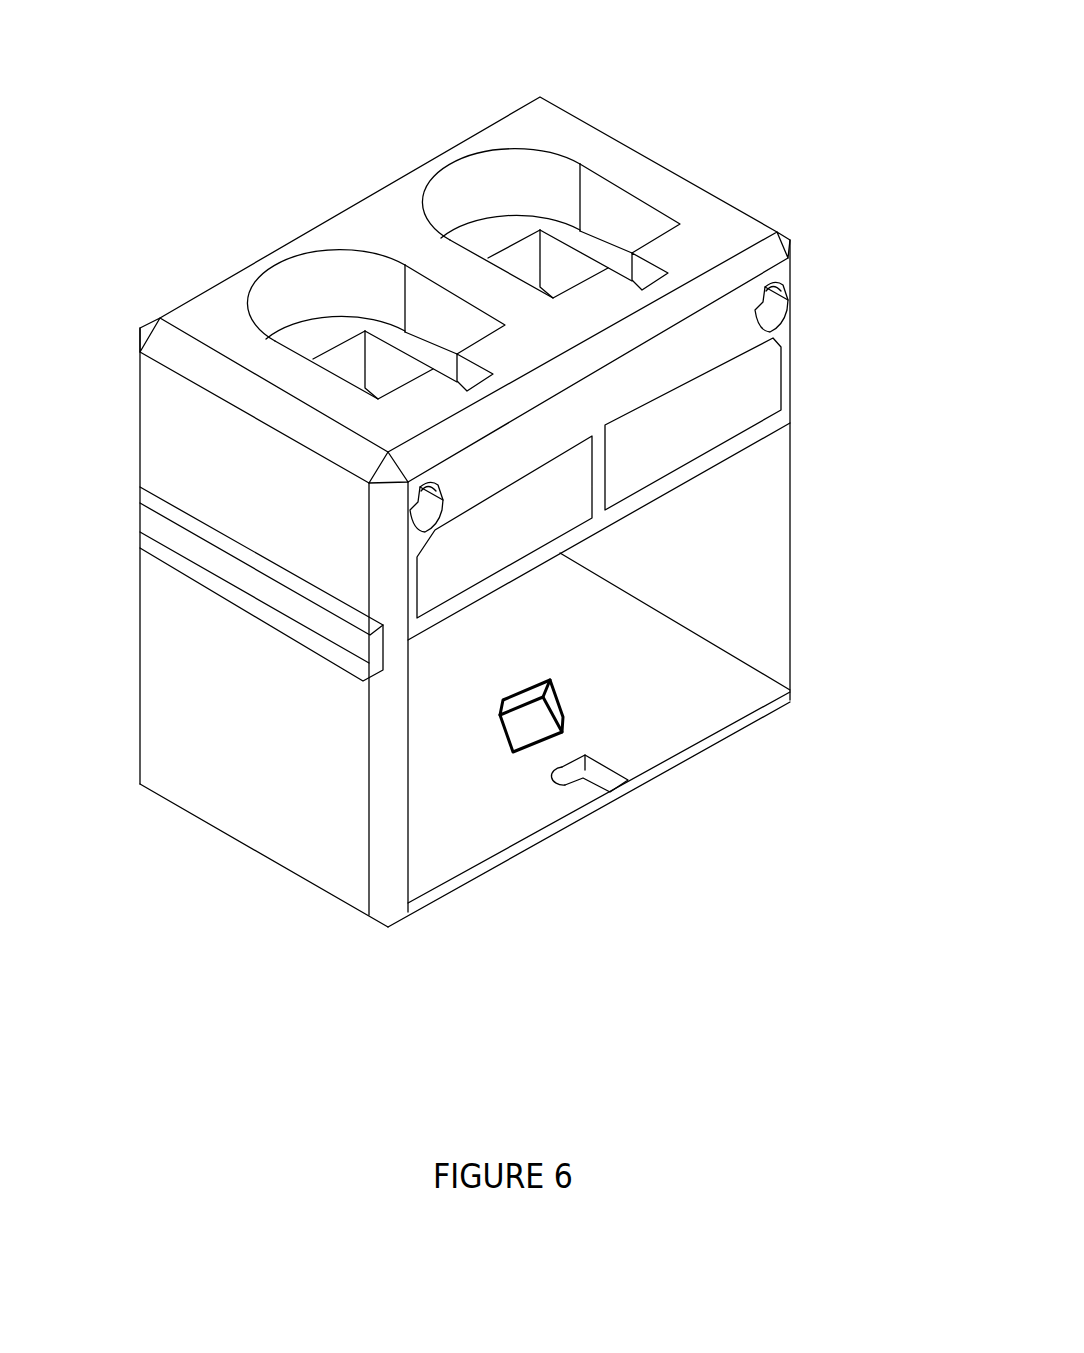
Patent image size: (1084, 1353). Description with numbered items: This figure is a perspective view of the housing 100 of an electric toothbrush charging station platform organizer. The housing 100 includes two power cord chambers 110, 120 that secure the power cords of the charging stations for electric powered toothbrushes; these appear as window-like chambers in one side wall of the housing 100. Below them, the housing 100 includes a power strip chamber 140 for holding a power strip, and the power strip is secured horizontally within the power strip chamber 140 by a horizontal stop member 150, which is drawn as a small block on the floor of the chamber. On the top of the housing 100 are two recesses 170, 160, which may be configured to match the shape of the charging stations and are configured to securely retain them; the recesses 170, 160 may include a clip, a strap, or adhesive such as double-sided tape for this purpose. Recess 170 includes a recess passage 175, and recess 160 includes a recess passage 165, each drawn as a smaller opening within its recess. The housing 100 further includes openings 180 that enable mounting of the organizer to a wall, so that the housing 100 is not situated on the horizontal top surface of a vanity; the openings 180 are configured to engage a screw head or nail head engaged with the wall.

The housing 100 is at (120, 184).
The power cord chamber 110 is at (472, 545).
The power cord chamber 120 is at (727, 400).
The power strip chamber 140 is at (647, 575).
The horizontal stop member 150 is at (563, 730).
The recess 160 is at (600, 207).
The recess passage 165 is at (533, 277).
The recess 170 is at (335, 277).
The recess passage 175 is at (357, 370).
The openings 180 is at (408, 508).